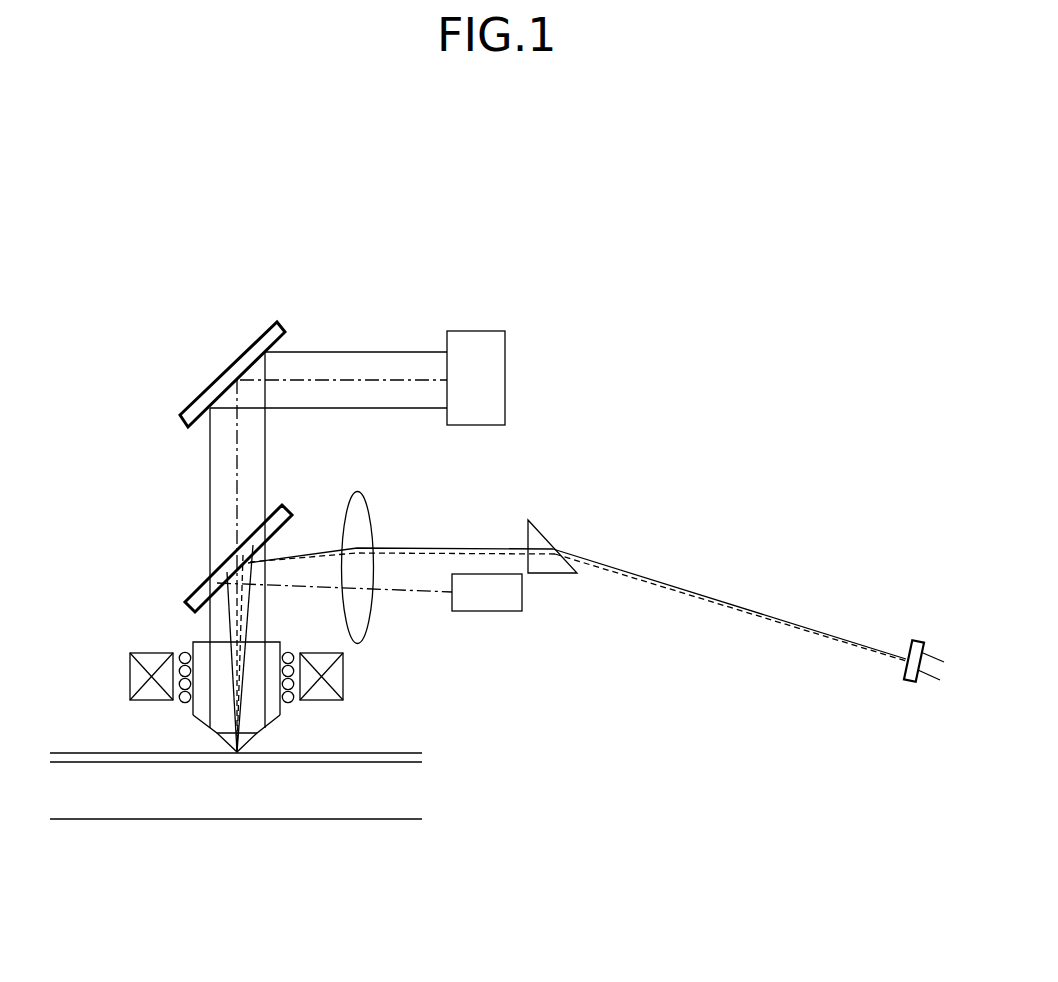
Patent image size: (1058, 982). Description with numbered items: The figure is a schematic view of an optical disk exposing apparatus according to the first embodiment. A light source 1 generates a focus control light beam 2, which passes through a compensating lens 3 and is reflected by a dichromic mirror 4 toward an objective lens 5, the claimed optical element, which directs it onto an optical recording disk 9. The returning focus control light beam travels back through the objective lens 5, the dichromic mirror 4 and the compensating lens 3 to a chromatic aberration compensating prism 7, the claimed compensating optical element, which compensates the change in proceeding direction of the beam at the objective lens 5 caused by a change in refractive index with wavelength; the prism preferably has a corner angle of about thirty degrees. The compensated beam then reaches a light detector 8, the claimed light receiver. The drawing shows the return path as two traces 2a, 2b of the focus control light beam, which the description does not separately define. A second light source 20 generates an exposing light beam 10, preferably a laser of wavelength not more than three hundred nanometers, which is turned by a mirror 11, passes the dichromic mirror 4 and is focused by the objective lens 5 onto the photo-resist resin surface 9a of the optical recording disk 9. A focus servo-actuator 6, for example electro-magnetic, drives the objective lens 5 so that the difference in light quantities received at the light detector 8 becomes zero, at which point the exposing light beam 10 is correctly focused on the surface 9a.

The light source 1 is at (493, 603).
The focus control light beam 2 is at (415, 595).
The reflected light beam (solid) 2a is at (422, 547).
The reflected light beam (dashed) 2b is at (477, 550).
The compensating lens 3 is at (365, 508).
The dichromic mirror 4 is at (288, 503).
The objective lens 5 is at (272, 722).
The focus servo-actuator 6 is at (188, 653).
The chromatic aberration compensating prism 7 is at (540, 530).
The light detector 8 is at (920, 640).
The optical recording disk 9 is at (410, 793).
The photo-resist resin surface 9a is at (408, 757).
The exposing light beam 10 is at (344, 362).
The mirror 11 is at (255, 332).
The light source 20 is at (475, 340).